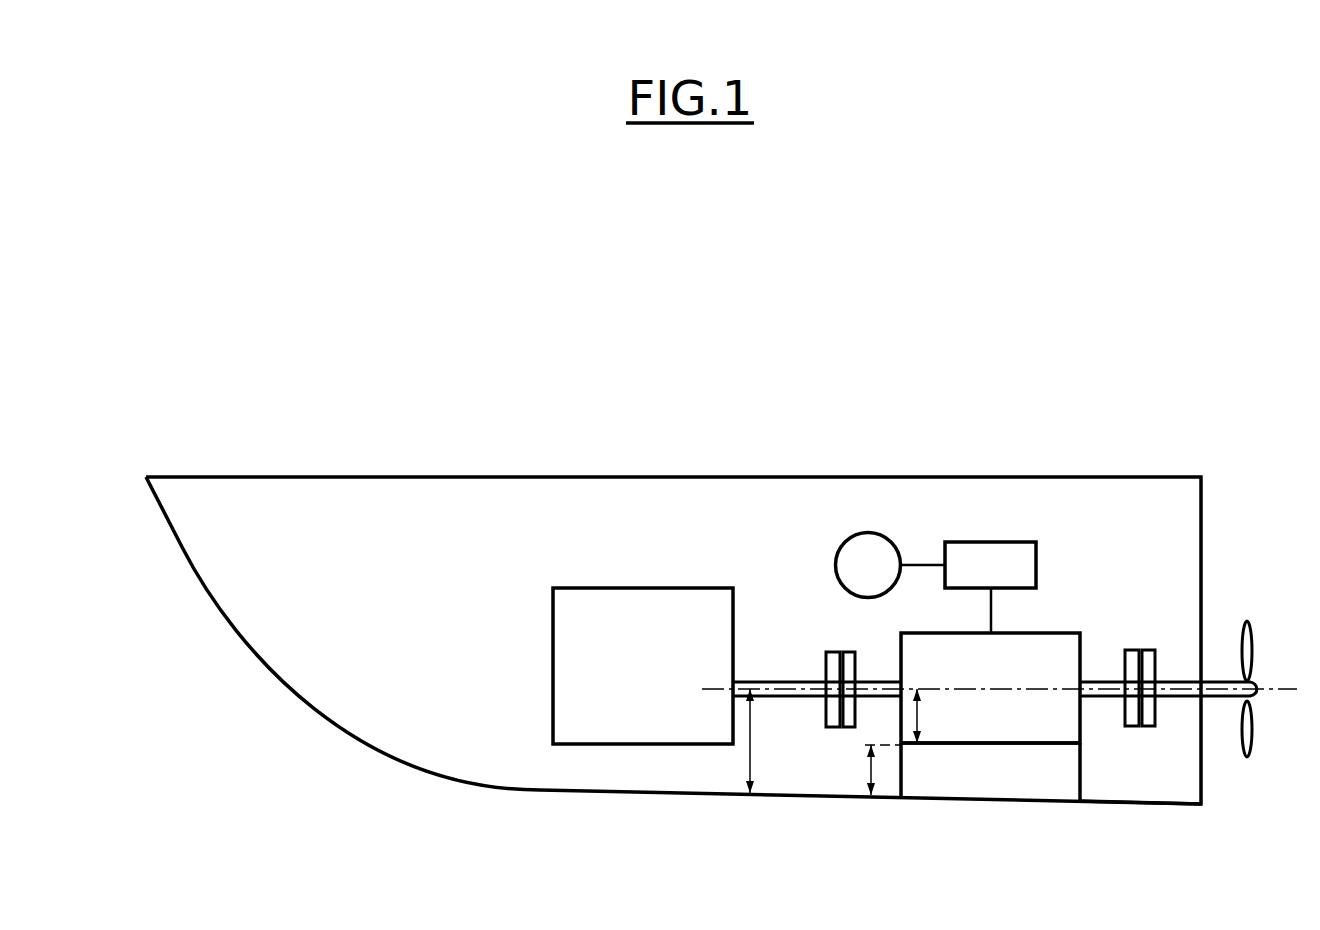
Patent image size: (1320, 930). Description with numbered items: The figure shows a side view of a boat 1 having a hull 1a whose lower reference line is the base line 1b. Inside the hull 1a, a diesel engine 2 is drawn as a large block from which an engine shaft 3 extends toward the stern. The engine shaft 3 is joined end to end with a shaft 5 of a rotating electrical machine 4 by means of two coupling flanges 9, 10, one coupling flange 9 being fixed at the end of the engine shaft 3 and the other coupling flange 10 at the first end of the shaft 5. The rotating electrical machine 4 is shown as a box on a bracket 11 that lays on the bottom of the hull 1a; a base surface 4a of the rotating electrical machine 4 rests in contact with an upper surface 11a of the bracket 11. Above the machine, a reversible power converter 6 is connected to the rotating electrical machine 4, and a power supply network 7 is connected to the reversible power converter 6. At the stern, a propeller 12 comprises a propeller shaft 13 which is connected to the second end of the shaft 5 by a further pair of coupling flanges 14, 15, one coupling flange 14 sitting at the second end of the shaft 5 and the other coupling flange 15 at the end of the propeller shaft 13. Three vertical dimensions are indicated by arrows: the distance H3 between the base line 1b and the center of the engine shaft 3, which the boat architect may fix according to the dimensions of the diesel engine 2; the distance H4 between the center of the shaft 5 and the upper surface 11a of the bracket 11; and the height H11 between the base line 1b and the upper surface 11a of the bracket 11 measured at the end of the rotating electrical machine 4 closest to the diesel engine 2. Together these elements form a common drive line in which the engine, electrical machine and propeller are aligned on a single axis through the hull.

The boat 1 is at (216, 348).
The hull 1a is at (181, 547).
The base line 1b is at (612, 793).
The diesel engine 2 is at (643, 666).
The engine shaft 3 is at (776, 683).
The rotating electrical machine 4 is at (990, 717).
The base surface 4a is at (1011, 744).
The shaft 5 is at (1097, 683).
The reversible power converter 6 is at (990, 565).
The power supply network 7 is at (868, 565).
The coupling flange 9 is at (830, 652).
The coupling flange 10 is at (853, 652).
The bracket 11 is at (989, 808).
The upper surface 11a is at (1036, 747).
The propeller 12 is at (1256, 631).
The propeller shaft 13 is at (1220, 682).
The coupling flange 14 is at (1128, 651).
The coupling flange 15 is at (1152, 651).
The distance between base line and center of engine shaft H3 is at (752, 742).
The distance between center of shaft and upper surface of bracket H4 is at (918, 717).
The height between base line and upper surface of bracket H11 is at (868, 773).